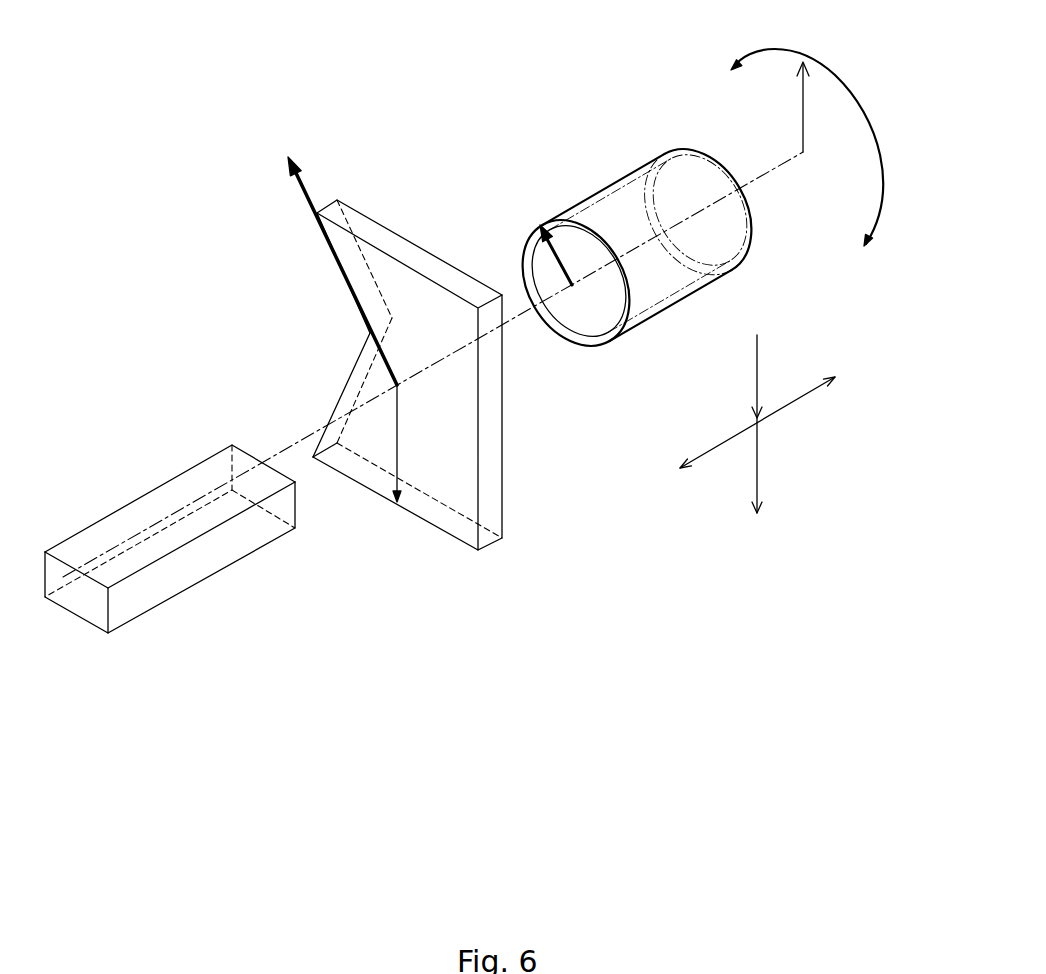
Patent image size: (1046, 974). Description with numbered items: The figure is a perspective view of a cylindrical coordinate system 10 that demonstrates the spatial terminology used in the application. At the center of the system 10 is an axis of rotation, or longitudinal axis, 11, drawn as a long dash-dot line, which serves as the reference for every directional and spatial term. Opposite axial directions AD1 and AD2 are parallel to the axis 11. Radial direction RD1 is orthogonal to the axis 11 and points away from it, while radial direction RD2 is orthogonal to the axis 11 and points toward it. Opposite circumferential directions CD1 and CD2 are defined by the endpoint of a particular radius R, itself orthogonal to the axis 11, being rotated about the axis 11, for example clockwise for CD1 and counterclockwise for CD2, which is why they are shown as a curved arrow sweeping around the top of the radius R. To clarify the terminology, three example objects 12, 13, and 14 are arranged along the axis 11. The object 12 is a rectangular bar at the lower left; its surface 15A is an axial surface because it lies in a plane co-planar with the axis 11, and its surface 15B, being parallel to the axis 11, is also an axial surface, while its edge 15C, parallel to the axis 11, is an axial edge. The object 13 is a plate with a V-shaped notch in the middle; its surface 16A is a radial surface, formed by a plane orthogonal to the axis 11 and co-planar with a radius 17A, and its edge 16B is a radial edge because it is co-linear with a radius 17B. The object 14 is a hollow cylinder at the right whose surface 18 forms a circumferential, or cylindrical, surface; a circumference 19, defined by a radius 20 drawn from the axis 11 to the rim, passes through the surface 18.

The cylindrical coordinate system 10 is at (262, 288).
The axis of rotation 11 is at (741, 190).
The object 12 is at (184, 522).
The object 13 is at (459, 332).
The object 14 is at (605, 258).
The axial surface 15A is at (135, 520).
The axial surface 15B is at (187, 573).
The axial edge 15C is at (162, 483).
The radial surface 16A is at (404, 284).
The radial edge 16B is at (350, 277).
The radius 17A is at (397, 438).
The radius 17B is at (298, 190).
The circumferential surface 18 is at (605, 180).
The circumference 19 is at (532, 244).
The radius 20 is at (556, 296).
The radius R is at (803, 100).
The circumferential direction CD1 is at (886, 204).
The circumferential direction CD2 is at (760, 43).
The radial direction RD1 is at (757, 477).
The radial direction RD2 is at (757, 353).
The axial direction AD1 is at (787, 407).
The axial direction AD2 is at (717, 443).